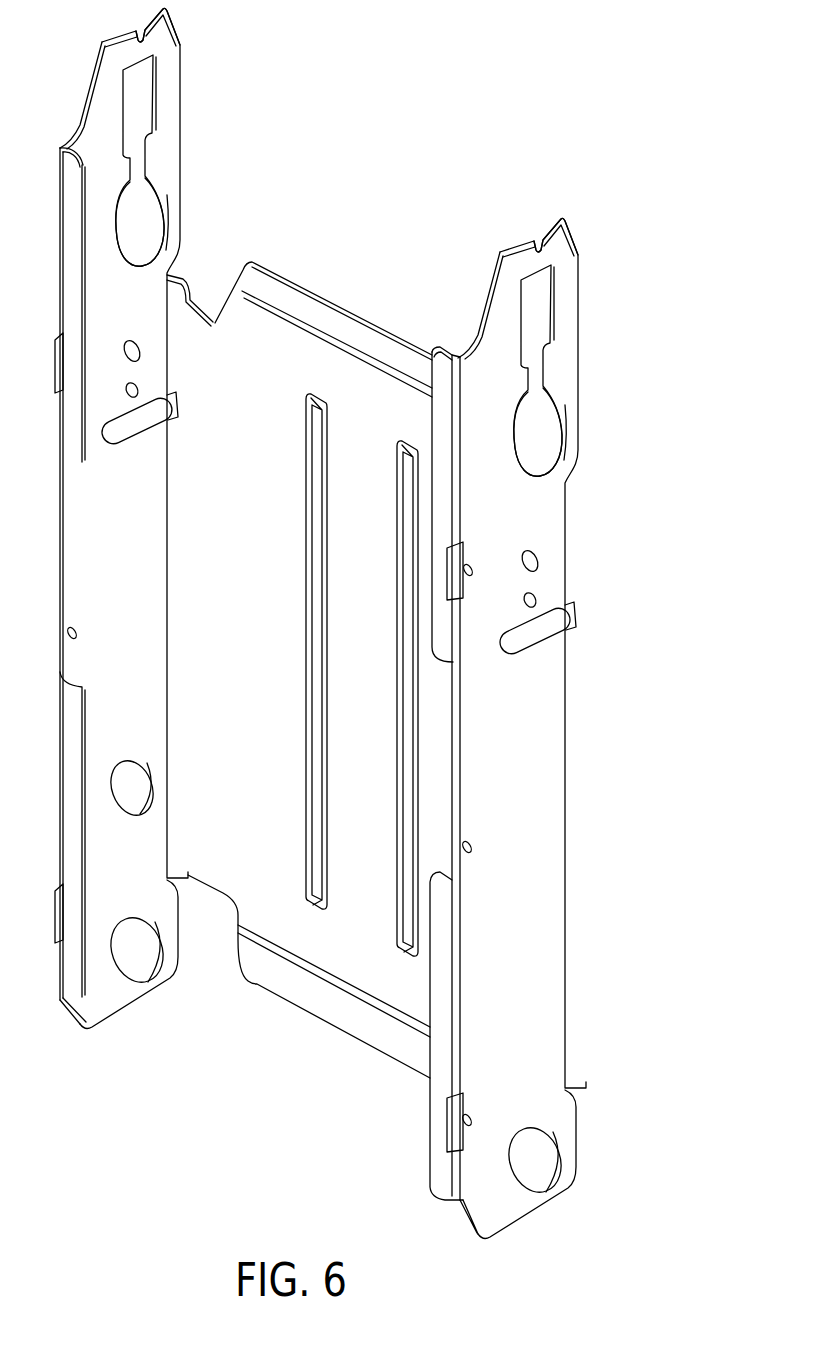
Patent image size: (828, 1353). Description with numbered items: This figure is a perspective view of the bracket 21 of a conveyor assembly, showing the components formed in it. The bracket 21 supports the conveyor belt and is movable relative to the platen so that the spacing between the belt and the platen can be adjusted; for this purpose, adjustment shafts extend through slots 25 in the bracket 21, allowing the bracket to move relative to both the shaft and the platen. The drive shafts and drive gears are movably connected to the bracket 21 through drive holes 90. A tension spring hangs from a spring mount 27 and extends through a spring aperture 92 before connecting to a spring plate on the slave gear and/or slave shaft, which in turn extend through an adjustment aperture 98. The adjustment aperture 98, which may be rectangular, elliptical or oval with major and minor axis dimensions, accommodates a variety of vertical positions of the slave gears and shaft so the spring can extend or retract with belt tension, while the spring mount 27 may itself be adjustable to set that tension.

The bracket 21 is at (375, 634).
The slots 25 is at (113, 435).
The spring mount 27 is at (143, 42).
The drive holes 90 is at (132, 968).
The spring aperture 92 is at (140, 98).
The adjustment aperture 98 is at (147, 213).